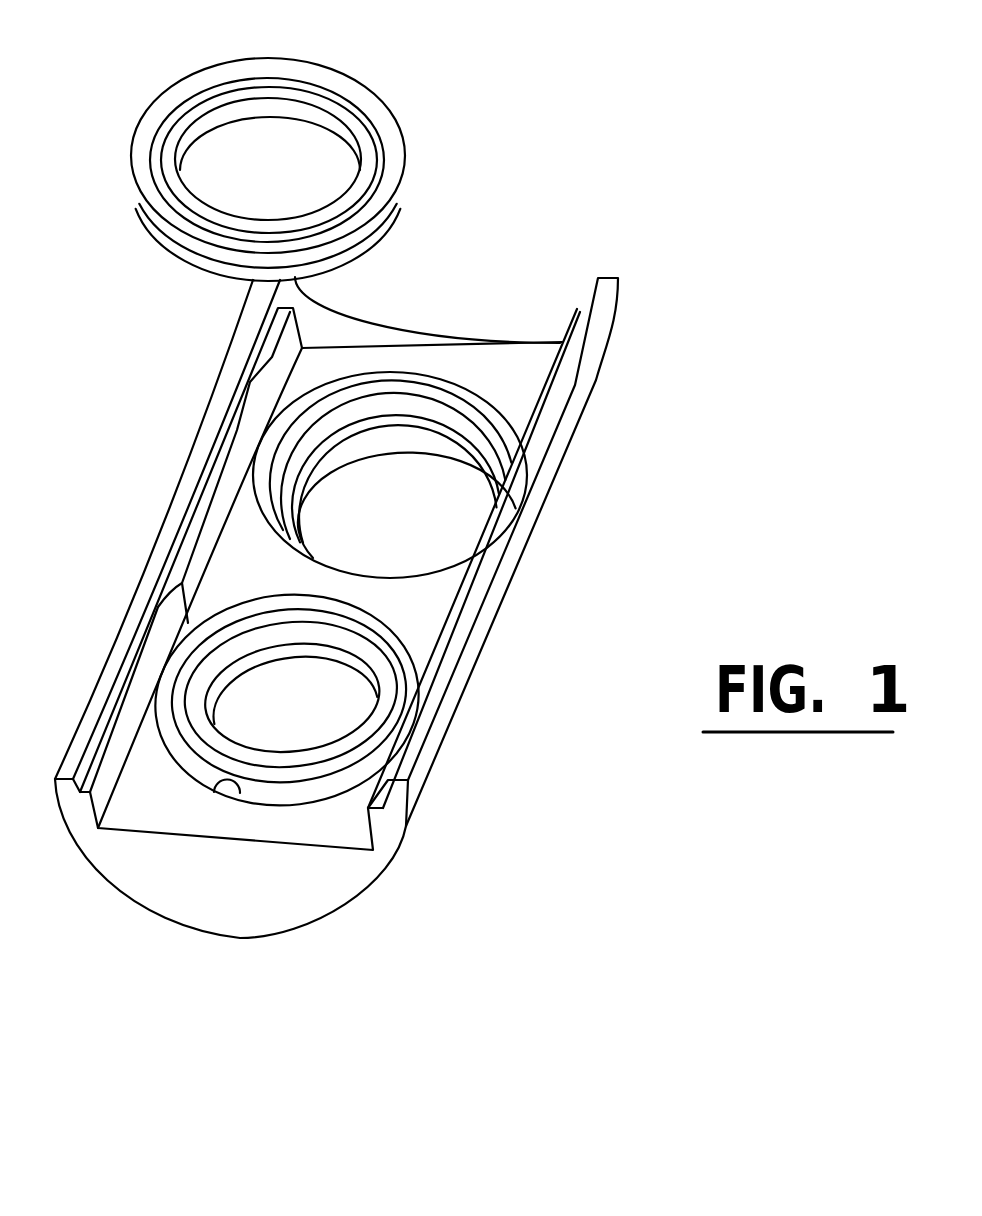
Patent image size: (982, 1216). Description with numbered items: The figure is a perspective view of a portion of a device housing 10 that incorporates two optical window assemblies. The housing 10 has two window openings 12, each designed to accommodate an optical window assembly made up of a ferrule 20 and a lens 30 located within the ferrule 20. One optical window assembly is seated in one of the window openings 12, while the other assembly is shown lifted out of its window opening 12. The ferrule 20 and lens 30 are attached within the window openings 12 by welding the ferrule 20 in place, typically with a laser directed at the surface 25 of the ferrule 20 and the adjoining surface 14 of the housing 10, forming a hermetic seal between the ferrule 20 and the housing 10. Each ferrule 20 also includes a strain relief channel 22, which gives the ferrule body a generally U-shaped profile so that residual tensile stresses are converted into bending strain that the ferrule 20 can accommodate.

The device housing 10 is at (778, 270).
The window opening 12 is at (418, 508).
The adjoining surface 14 is at (413, 608).
The ferrule 20 is at (432, 172).
The strain relief channel 22 is at (373, 135).
The surface 25 is at (140, 167).
The lens 30 is at (297, 147).